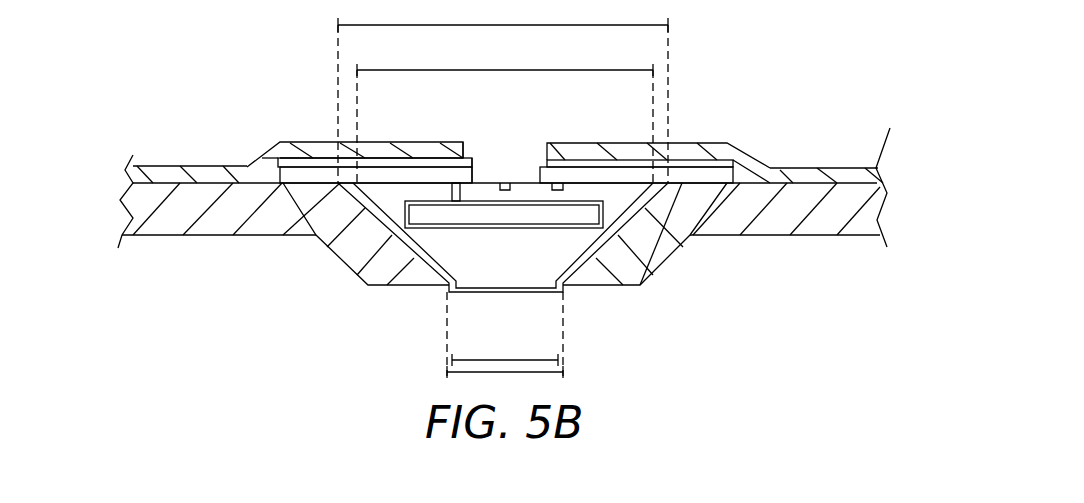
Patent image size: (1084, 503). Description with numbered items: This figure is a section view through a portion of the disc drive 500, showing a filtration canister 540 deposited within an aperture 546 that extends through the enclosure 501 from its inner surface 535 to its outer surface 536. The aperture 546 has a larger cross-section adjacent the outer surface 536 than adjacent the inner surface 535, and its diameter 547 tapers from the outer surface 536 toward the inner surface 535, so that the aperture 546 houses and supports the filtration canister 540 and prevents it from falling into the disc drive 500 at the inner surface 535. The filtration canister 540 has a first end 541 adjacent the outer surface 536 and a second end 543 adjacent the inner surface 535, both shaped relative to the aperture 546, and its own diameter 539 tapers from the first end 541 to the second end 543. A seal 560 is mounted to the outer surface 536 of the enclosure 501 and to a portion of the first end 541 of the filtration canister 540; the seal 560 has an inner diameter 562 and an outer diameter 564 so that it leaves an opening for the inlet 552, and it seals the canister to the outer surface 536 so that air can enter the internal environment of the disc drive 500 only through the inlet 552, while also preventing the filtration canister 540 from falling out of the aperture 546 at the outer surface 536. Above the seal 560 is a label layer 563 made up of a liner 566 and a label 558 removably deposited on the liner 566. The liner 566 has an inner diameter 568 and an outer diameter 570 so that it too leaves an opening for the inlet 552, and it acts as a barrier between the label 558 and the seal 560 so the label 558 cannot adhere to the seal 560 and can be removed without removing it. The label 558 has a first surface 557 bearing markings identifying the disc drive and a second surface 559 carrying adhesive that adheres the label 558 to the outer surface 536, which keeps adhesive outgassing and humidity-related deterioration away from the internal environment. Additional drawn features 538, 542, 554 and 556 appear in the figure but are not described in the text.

The disc drive 500 is at (790, 78).
The enclosure 501 is at (772, 170).
The inner surface 535 is at (767, 236).
The outer surface 536 is at (793, 182).
The cavity liner 538 is at (547, 290).
The diameter of filtration canister 539 is at (525, 70).
The filtration canister 540 is at (365, 208).
The first end 541 is at (618, 160).
The sidewall region 542 is at (357, 275).
The second end 543 is at (497, 290).
The aperture 546 is at (630, 224).
The diameter of aperture 547 is at (493, 25).
The inlet 552 is at (506, 183).
The electrode layer 554 is at (455, 185).
The electrode layer 556 is at (562, 170).
The first surface 557 is at (157, 165).
The label 558 is at (690, 150).
The second surface 559 is at (210, 184).
The seal 560 is at (320, 160).
The inner diameter of seal 562 is at (474, 167).
The label layer 563 is at (549, 149).
The outer diameter of seal 564 is at (243, 166).
The liner 566 is at (370, 157).
The inner diameter of liner 568 is at (466, 160).
The outer diameter of liner 570 is at (273, 165).